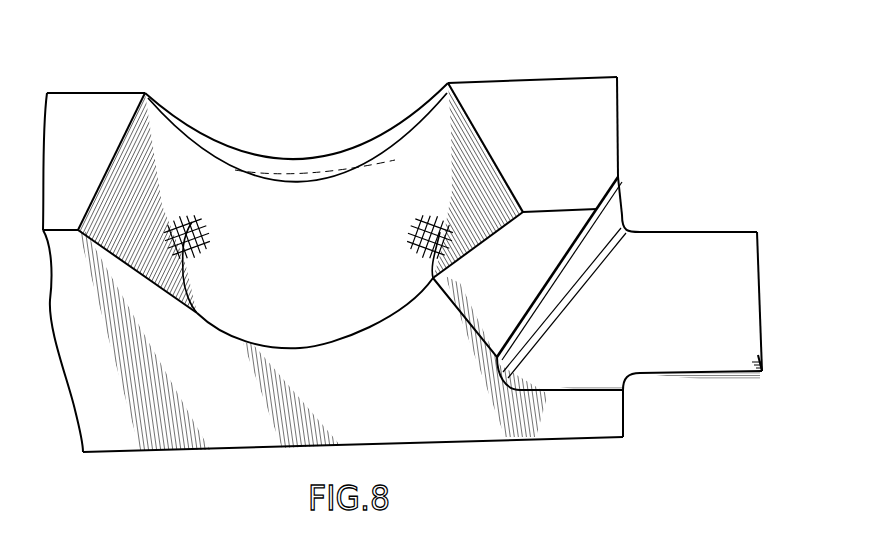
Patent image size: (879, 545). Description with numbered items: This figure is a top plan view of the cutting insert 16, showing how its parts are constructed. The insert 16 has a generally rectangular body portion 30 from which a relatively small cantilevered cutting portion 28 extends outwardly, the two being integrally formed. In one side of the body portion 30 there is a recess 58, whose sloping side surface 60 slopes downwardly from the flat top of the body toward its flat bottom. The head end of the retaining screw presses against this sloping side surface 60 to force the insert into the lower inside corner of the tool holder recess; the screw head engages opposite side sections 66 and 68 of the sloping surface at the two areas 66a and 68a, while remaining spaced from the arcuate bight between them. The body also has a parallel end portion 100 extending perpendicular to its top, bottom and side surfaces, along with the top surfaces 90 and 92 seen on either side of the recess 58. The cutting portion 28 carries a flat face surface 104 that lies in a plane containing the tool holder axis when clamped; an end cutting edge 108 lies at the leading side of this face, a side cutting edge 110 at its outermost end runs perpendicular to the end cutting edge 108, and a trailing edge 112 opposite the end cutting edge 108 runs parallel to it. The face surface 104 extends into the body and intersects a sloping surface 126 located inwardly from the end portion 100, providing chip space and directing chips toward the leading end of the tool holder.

The insert 16 is at (755, 86).
The cantilevered cutting portion 28 is at (807, 180).
The body portion 30 is at (92, 480).
The recess 58 is at (318, 90).
The sloping side surface 60 is at (300, 310).
The side section 66 is at (108, 231).
The side area 66a is at (195, 302).
The side section 68 is at (513, 210).
The side area 68a is at (433, 282).
The right top surface 90 is at (603, 95).
The left top surface 92 is at (84, 105).
The end portion 100 is at (618, 177).
The face surface 104 is at (740, 263).
The end cutting edge 108 is at (675, 373).
The side cutting edge 110 is at (764, 350).
The trailing edge 112 is at (682, 232).
The sloping surface 126 is at (562, 267).